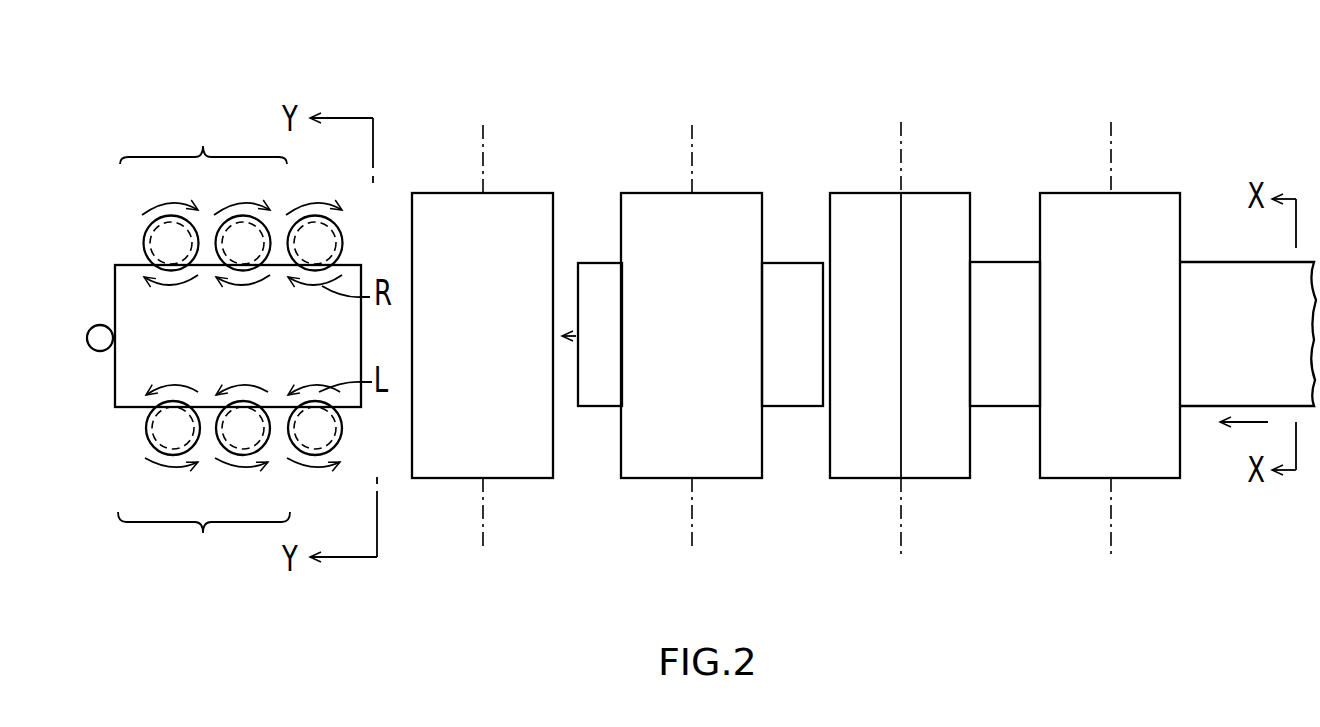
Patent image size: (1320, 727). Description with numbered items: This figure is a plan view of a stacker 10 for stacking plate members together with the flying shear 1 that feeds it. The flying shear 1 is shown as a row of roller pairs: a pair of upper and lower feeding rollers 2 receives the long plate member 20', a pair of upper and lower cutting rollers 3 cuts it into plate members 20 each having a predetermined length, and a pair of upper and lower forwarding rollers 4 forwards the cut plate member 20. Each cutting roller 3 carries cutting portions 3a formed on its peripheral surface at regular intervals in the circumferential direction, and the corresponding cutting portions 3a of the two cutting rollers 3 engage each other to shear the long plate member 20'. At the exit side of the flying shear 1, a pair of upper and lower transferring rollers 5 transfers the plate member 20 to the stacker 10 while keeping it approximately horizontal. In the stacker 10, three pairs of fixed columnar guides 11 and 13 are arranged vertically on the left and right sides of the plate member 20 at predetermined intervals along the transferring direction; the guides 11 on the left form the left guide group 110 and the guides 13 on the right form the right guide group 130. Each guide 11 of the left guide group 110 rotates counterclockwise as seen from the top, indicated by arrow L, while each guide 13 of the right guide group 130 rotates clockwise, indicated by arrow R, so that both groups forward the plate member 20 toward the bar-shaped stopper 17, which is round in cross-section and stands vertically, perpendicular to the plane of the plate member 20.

The flying shear 1 is at (966, 130).
The feeding roller 2 is at (1060, 218).
The cutting roller 3 is at (850, 218).
The cutting portion 3a is at (903, 225).
The forwarding roller 4 is at (648, 207).
The transferring roller 5 is at (515, 213).
The stacker 10 is at (249, 115).
The left guide 11 is at (152, 435).
The right guide 13 is at (155, 245).
The stopper 17 is at (93, 335).
The plate member 20 is at (445, 323).
The long plate member 20' is at (1248, 314).
The left guide group 110 is at (204, 545).
The right guide group 130 is at (203, 133).